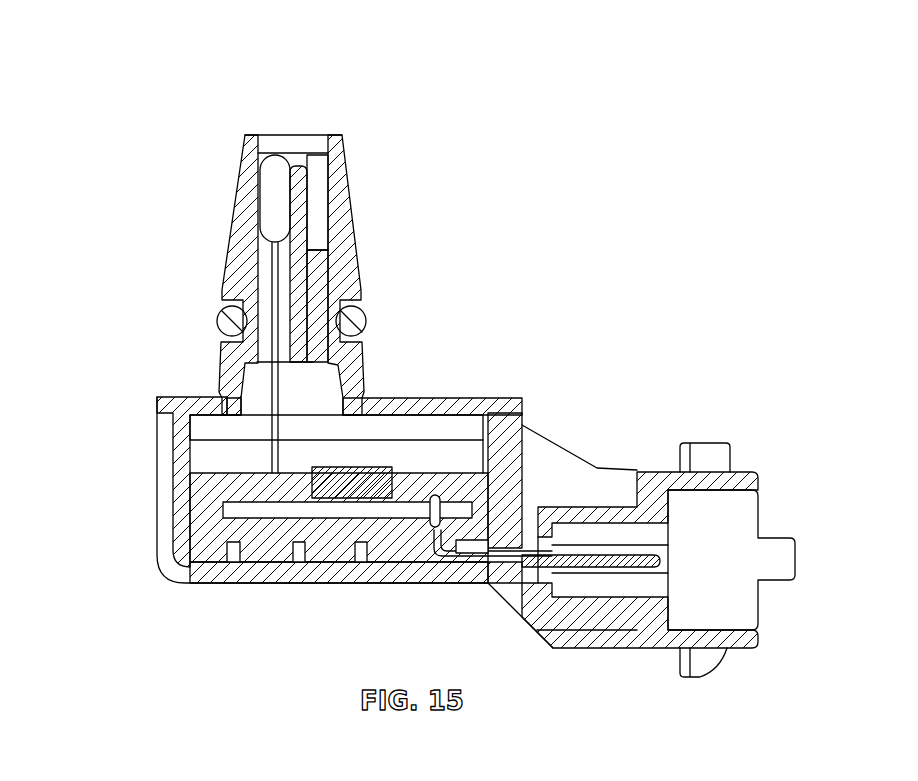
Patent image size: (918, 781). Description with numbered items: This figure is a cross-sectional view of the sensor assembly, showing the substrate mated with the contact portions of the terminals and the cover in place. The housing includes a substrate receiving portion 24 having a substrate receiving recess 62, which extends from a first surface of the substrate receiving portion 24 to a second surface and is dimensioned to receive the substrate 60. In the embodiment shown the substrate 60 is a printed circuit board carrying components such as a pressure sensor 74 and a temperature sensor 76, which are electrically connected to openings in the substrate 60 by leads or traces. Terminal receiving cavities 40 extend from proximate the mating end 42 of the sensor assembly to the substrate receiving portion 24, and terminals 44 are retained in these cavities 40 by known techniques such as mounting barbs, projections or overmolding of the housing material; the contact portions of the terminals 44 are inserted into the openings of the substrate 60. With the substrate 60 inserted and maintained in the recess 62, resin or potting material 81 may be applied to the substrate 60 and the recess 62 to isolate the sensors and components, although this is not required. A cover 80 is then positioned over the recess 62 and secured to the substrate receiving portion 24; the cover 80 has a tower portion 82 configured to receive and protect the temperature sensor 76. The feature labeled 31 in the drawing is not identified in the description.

The tower portion 82 is at (240, 235).
The temperature sensor 76 is at (265, 230).
The cover 80 is at (458, 398).
The substrate receiving recess 62 is at (200, 450).
The substrate receiving portion 24 is at (268, 542).
The resin or potting material 81 is at (207, 520).
The substrate 60 is at (342, 520).
The pressure sensor 74 is at (372, 467).
The wire 31 is at (503, 548).
The terminal receiving cavities 40 is at (600, 532).
The mating end 42 is at (760, 477).
The terminals 44 is at (603, 568).